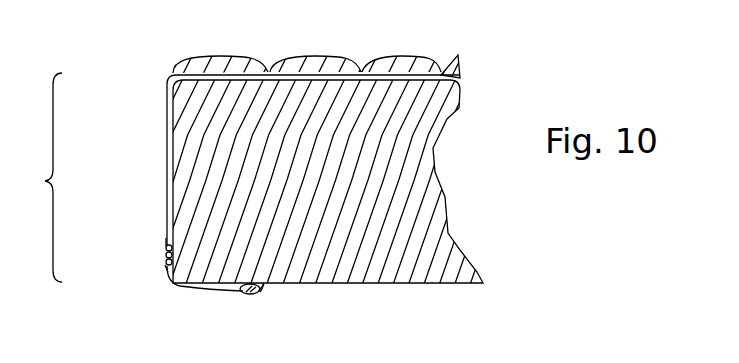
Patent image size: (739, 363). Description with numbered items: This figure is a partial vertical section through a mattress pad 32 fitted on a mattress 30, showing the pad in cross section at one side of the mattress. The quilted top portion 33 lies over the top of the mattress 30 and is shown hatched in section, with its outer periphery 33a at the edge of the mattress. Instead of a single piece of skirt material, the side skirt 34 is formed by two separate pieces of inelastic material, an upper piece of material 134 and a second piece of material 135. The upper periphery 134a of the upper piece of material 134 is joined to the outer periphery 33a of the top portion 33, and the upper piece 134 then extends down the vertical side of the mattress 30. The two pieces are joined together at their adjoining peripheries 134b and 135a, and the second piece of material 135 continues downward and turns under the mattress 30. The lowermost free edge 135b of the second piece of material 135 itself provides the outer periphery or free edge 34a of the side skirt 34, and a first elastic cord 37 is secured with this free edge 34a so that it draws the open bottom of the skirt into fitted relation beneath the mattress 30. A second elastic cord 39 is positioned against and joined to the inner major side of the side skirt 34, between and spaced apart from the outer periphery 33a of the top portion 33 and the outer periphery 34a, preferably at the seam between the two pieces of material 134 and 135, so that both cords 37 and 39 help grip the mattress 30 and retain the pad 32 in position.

The mattress 30 is at (431, 197).
The mattress pad 32 is at (462, 67).
The quilted top portion 33 is at (340, 58).
The outer periphery of top portion 33a is at (173, 68).
The side skirt 34 is at (36, 177).
The outer periphery of side skirt 34a is at (265, 286).
The first elastic cord 37 is at (249, 296).
The second elastic cord 39 is at (165, 266).
The upper piece of material 134 is at (167, 115).
The upper periphery of upper piece of material 134a is at (173, 70).
The adjoining periphery of upper piece of material 134b is at (168, 242).
The second piece of material 135 is at (209, 291).
The adjoining periphery of second piece of material 135a is at (164, 258).
The free edge of second piece of material 135b is at (262, 292).